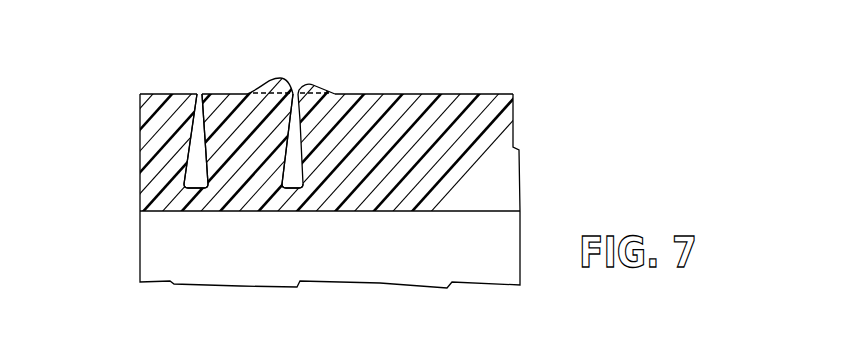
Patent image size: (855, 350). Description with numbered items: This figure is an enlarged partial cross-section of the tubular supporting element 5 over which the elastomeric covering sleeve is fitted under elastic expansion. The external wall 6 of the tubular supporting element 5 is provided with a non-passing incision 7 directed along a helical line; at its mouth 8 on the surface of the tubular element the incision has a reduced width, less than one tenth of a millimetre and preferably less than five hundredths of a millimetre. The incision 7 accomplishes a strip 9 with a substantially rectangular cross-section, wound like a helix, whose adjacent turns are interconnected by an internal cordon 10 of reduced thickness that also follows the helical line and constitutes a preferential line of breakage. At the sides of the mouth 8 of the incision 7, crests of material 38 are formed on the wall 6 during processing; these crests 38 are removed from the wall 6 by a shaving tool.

The tubular supporting element 5 is at (440, 127).
The external wall 6 is at (397, 95).
The non-passing incision 7 is at (195, 150).
The mouth 8 is at (198, 96).
The strip 9 is at (240, 155).
The internal cordon 10 is at (193, 195).
The crests of material 38 is at (277, 77).